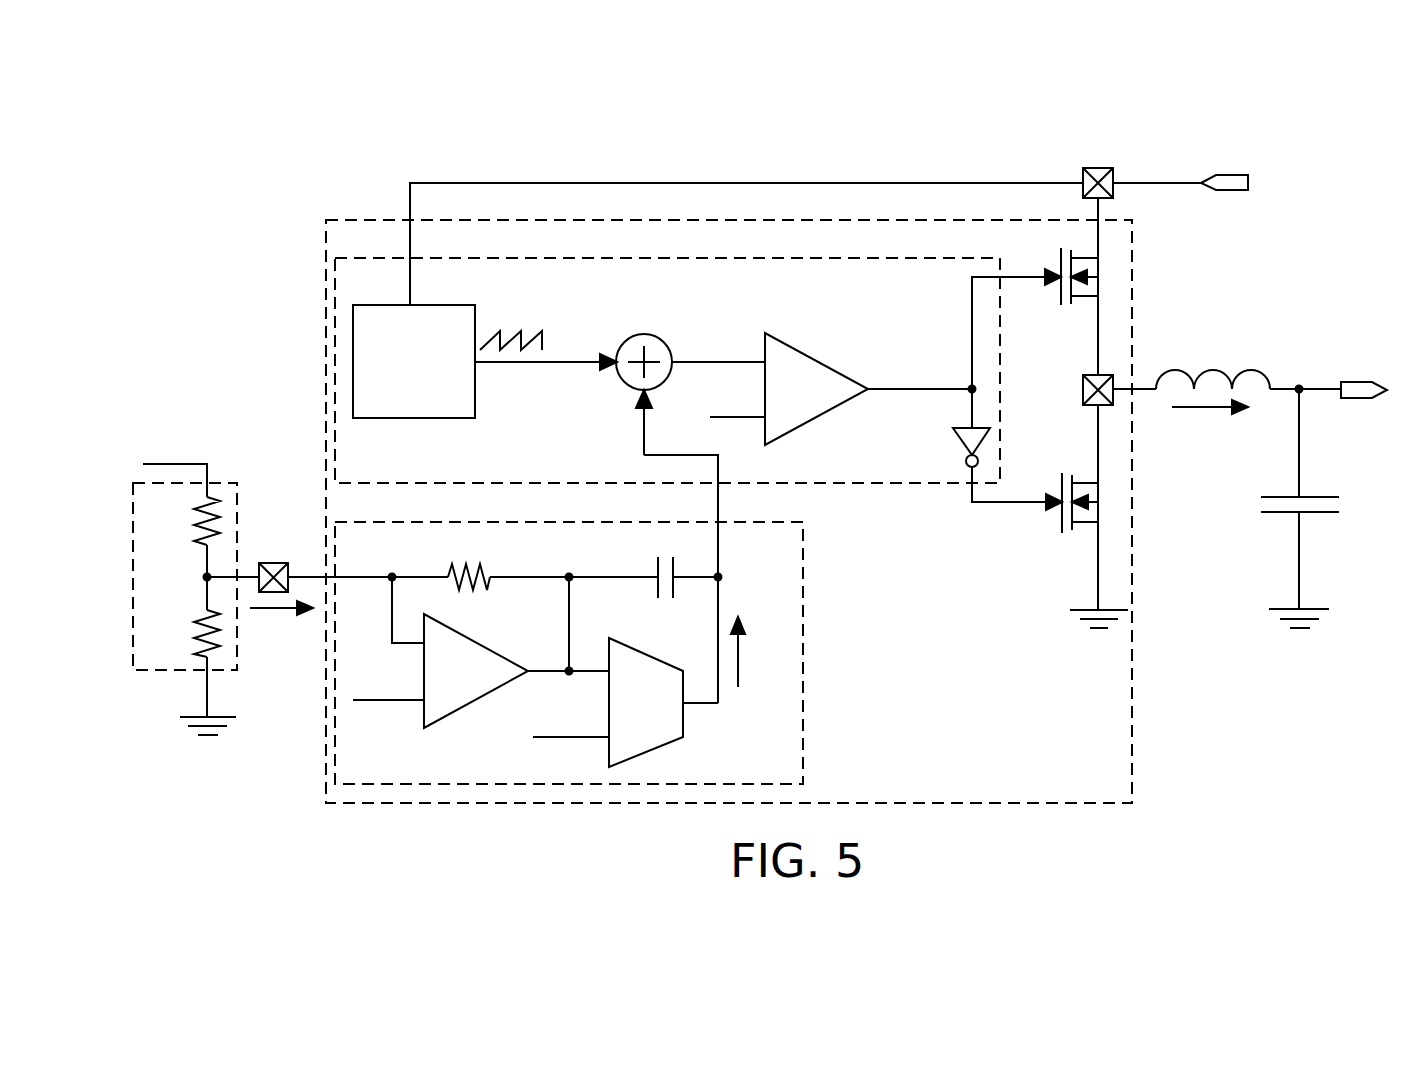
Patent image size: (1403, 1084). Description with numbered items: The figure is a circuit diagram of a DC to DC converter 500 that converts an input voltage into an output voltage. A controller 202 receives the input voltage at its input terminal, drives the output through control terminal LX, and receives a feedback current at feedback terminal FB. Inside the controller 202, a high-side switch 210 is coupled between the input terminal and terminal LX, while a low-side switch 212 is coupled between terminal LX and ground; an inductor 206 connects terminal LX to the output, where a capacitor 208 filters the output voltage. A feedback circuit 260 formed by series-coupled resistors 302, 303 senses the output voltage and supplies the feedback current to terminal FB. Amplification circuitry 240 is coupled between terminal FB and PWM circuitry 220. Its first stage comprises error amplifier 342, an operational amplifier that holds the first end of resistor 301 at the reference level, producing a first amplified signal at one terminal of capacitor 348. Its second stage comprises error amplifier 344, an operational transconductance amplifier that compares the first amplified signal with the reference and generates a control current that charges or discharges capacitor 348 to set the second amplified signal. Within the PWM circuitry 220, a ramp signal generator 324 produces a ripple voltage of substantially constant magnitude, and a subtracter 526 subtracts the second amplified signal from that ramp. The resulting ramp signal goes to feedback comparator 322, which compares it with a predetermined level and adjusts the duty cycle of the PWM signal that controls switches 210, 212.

The DC to DC converter 500 is at (292, 182).
The controller 202 is at (326, 278).
The pulse-width modulation (PWM) circuitry 220 is at (850, 258).
The ramp signal generator 324 is at (455, 305).
The subtracter 526 is at (650, 334).
The feedback comparator 322 is at (822, 357).
The high-side switch 210 is at (1060, 292).
The low-side switch 212 is at (1060, 515).
The inductor 206 is at (1213, 368).
The capacitor 208 is at (1308, 497).
The feedback circuit 260 is at (176, 584).
The resistor 302 is at (197, 540).
The resistor 303 is at (197, 633).
The amplification circuitry 240 is at (803, 590).
The resistor 301 is at (468, 565).
The capacitor 348 is at (658, 565).
The error amplifier 342 is at (470, 636).
The error amplifier 344 is at (640, 648).